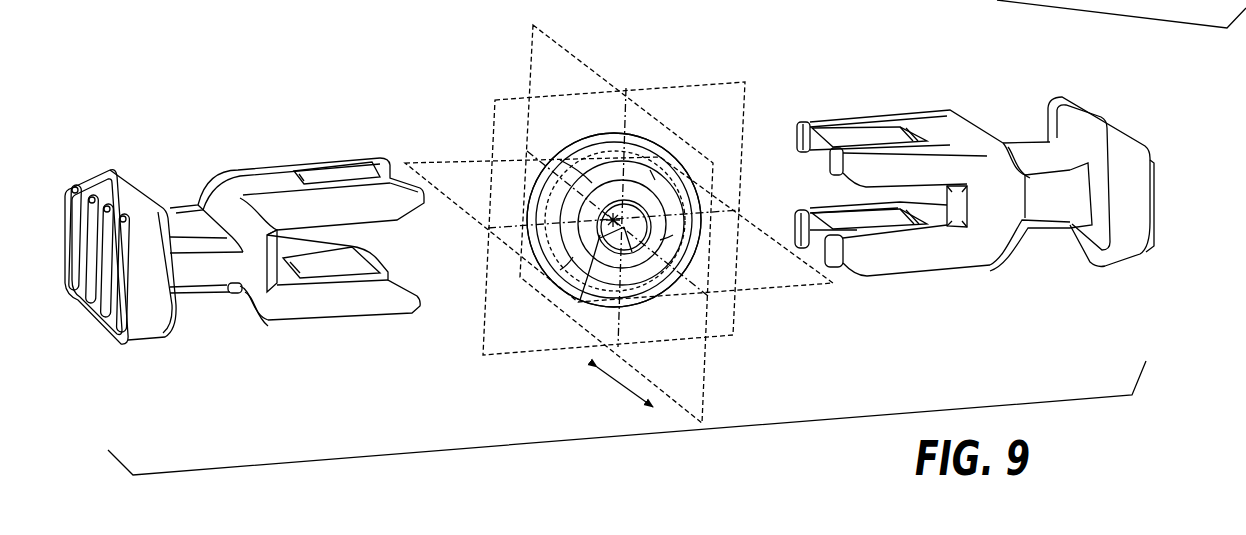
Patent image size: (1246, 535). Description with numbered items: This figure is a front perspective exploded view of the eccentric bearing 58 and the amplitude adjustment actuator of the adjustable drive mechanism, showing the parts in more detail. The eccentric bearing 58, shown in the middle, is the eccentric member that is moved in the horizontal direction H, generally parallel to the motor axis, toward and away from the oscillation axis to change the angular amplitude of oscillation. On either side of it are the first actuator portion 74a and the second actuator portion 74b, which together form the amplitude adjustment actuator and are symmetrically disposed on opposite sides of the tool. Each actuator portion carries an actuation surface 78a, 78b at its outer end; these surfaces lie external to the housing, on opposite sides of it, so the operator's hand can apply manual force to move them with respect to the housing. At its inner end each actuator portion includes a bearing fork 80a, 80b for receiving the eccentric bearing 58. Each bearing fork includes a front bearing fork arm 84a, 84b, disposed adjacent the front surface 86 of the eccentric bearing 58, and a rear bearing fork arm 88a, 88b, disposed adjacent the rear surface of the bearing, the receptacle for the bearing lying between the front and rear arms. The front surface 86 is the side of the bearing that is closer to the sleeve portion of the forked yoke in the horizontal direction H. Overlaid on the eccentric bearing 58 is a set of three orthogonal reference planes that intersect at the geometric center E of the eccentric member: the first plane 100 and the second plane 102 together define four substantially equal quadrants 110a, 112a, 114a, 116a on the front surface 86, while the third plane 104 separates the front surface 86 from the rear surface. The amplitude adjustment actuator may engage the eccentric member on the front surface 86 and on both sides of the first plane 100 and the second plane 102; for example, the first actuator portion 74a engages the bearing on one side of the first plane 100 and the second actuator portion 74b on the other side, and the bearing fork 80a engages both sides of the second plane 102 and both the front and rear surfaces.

The eccentric bearing 58 is at (626, 132).
The first actuator portion 74a is at (263, 165).
The second actuator portion 74b is at (1030, 155).
The first actuation surface 78a is at (78, 190).
The second actuation surface 78b is at (1155, 165).
The bearing fork 80a is at (191, 270).
The bearing fork 80b is at (1057, 212).
The front bearing fork arm 84a is at (365, 213).
The front bearing fork arm 84b is at (385, 303).
The front surface 86 is at (670, 293).
The rear bearing fork arm 88a is at (350, 175).
The rear bearing fork arm 88b is at (333, 272).
The first plane 100 is at (558, 33).
The second plane 102 is at (457, 157).
The third plane 104 is at (693, 80).
The quadrant 110a is at (592, 182).
The quadrant 112a is at (573, 257).
The quadrant 114a is at (673, 235).
The quadrant 116a is at (655, 180).
The geometric center E is at (600, 235).
The horizontal direction H is at (623, 388).